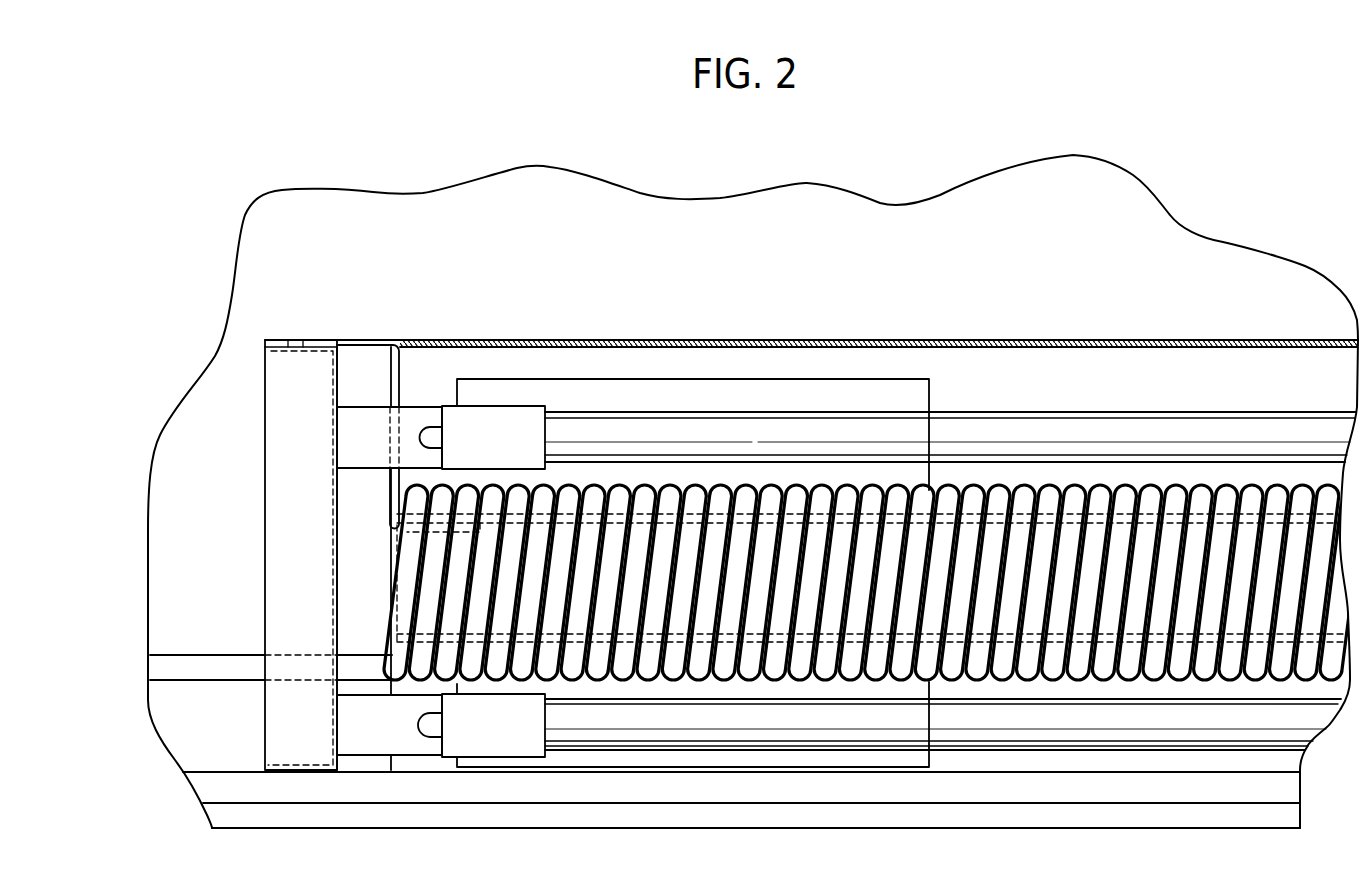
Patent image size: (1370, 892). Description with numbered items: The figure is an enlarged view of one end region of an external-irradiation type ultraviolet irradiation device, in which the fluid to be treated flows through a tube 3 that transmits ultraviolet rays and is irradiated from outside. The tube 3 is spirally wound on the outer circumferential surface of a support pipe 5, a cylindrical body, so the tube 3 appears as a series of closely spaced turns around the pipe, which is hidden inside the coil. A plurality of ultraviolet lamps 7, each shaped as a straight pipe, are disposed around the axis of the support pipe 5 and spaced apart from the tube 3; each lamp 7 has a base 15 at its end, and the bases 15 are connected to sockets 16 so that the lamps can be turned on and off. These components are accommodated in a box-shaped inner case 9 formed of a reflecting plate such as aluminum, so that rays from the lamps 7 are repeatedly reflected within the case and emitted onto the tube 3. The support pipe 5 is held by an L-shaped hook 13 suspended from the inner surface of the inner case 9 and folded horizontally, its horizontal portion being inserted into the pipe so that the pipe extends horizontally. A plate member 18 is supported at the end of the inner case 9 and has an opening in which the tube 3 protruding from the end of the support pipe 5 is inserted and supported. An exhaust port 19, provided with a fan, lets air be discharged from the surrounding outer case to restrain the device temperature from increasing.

The tube 3 is at (1148, 483).
The support pipe 5 is at (397, 627).
The ultraviolet lamp 7 is at (968, 412).
The inner case 9 is at (1060, 340).
The hook 13 is at (398, 373).
The base 15 is at (502, 406).
The socket 16 is at (360, 469).
The plate member 18 is at (264, 403).
The exhaust port 19 is at (860, 379).